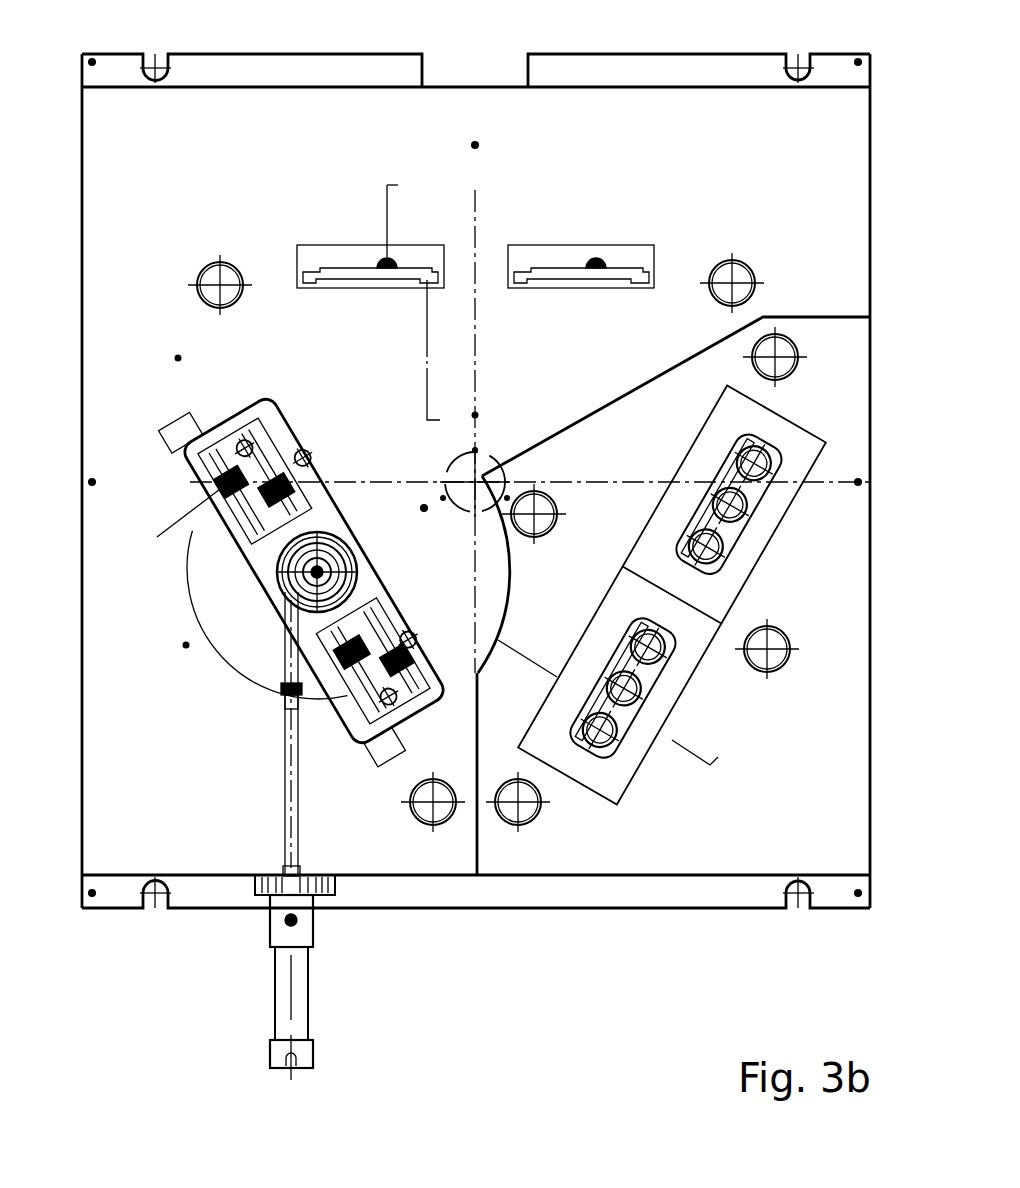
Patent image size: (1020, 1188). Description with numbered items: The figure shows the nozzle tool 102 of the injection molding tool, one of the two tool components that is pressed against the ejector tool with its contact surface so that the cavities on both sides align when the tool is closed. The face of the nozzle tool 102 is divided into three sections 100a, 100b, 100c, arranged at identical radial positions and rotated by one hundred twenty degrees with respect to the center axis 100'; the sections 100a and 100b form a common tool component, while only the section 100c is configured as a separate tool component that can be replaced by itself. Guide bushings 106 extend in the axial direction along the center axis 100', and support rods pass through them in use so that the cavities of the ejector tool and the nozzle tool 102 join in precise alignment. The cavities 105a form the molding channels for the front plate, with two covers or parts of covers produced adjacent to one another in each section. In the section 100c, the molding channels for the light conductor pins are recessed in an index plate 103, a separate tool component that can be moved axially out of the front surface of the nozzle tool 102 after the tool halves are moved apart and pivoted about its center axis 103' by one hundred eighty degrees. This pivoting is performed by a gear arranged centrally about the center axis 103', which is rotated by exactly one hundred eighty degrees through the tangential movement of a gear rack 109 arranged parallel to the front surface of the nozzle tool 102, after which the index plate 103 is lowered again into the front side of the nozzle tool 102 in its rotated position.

The nozzle tool 102 is at (353, 77).
The section 100a is at (395, 186).
The section 100b is at (672, 607).
The section 100c is at (210, 812).
The center axis 100' is at (510, 445).
The index plate 103 is at (313, 572).
The center axis 103' is at (371, 572).
The cavities 105a is at (553, 280).
The guide bushings 106 is at (208, 268).
The gear rack 109 is at (295, 660).